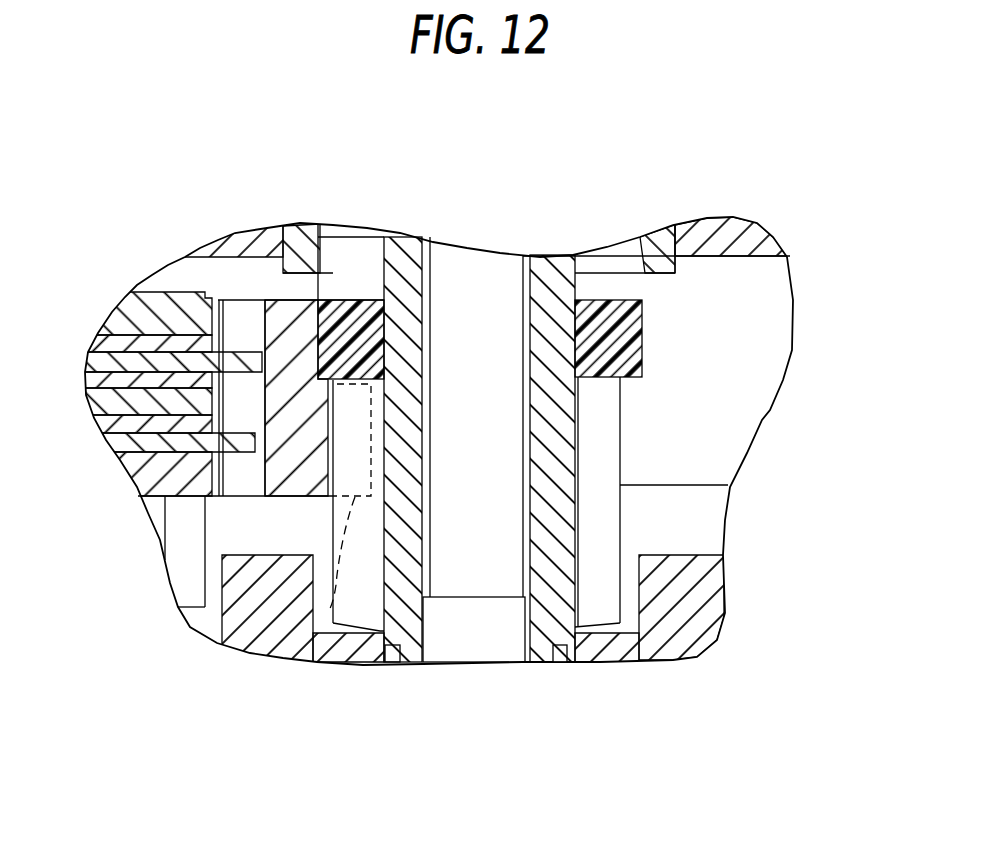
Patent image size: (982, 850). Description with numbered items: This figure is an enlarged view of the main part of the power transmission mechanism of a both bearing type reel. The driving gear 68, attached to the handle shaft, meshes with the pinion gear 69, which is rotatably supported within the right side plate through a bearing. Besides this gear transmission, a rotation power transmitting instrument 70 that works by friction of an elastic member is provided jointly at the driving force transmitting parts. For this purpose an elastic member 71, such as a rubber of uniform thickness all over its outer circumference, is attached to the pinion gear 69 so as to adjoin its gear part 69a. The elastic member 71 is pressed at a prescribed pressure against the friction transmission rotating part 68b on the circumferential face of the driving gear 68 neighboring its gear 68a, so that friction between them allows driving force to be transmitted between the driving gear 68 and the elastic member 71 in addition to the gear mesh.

The driving gear 68 is at (272, 456).
The gear 68a is at (328, 612).
The friction transmission rotating part 68b is at (328, 298).
The pinion gear 69 is at (560, 543).
The gear part 69a is at (602, 427).
The rotation power transmitting instrument 70 is at (355, 258).
The elastic member 71 is at (607, 310).